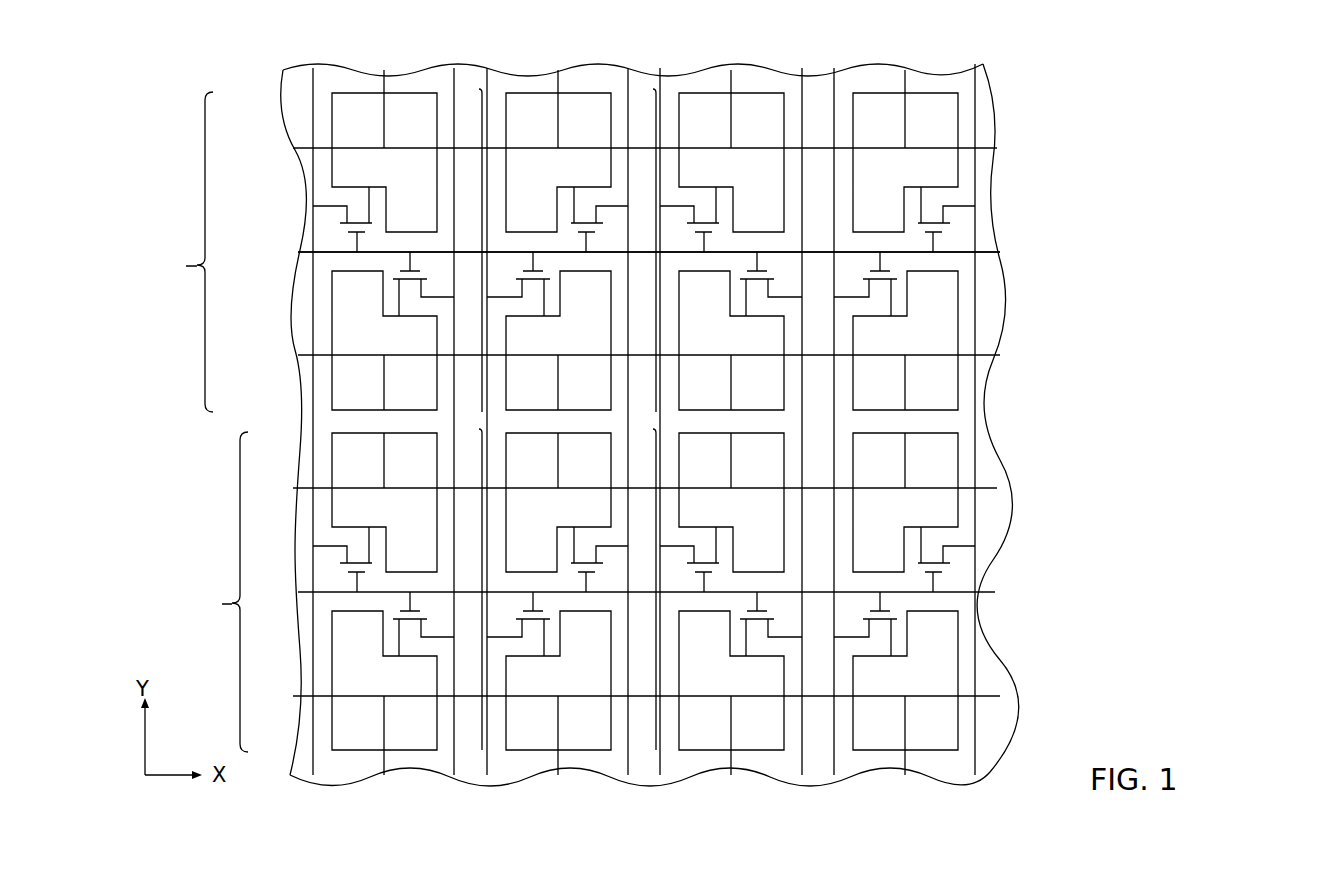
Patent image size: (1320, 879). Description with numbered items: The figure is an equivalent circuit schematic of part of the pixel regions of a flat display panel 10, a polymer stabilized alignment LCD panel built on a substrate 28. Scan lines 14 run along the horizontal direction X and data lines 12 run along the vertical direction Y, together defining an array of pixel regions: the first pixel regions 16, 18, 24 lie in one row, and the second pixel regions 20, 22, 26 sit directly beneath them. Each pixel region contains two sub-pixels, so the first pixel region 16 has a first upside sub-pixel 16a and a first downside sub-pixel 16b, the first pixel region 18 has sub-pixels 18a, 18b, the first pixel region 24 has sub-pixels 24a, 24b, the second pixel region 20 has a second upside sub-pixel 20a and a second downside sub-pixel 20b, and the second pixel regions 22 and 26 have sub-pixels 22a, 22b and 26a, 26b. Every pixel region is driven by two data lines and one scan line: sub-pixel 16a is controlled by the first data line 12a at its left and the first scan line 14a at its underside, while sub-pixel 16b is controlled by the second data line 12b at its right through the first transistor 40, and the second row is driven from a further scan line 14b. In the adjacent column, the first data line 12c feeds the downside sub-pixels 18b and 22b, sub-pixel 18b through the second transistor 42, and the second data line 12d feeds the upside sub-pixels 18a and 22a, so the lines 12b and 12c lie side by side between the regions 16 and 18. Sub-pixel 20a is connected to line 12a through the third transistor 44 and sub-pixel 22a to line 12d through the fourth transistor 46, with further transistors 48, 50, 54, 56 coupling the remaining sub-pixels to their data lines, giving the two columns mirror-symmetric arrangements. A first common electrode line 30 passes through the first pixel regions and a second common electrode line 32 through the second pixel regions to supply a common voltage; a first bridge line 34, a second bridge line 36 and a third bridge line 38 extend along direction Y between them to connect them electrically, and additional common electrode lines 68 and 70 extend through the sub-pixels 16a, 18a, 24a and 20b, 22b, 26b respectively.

The flat display panel 10 is at (1072, 88).
The data lines 12 is at (976, 88).
The first data line 12a is at (313, 120).
The second data line 12b is at (454, 88).
The first data line 12c is at (488, 92).
The second data line 12d is at (627, 90).
The scan lines 14 is at (1000, 250).
The first scan line 14a is at (300, 252).
The second gate line 14b is at (300, 592).
The first pixel region 16 is at (185, 252).
The first upside sub-pixel 16a is at (431, 216).
The first downside sub-pixel 16b is at (379, 306).
The first pixel region 18 is at (482, 316).
The first upside sub-pixel 18a is at (553, 216).
The first downside sub-pixel 18b is at (604, 306).
The second pixel region 20 is at (221, 592).
The second upside sub-pixel 20a is at (431, 556).
The second downside sub-pixel 20b is at (379, 646).
The second pixel region 22 is at (482, 656).
The second upside sub-pixel 22a is at (553, 556).
The second downside sub-pixel 22b is at (604, 646).
The first pixel region 24 is at (656, 316).
The first upside sub-pixel 24a is at (781, 216).
The sub-pixel electrode 24b is at (727, 306).
The second pixel region 26 is at (656, 656).
The sub-pixel electrode 26a is at (781, 556).
The second downside sub-pixel 26b is at (727, 646).
The substrate 28 is at (997, 182).
The first common electrode line 30 is at (995, 352).
The second common electrode line 32 is at (997, 490).
The first bridge line 34 is at (384, 421).
The second bridge line 36 is at (558, 421).
The third bridge line 38 is at (731, 421).
The first transistor 40 is at (426, 291).
The second transistor 42 is at (515, 291).
The third transistor 44 is at (345, 555).
The fourth transistor 46 is at (600, 553).
The thin film transistor 48 is at (345, 215).
The thin film transistor 50 is at (600, 213).
The thin film transistor 54 is at (426, 631).
The thin film transistor 56 is at (515, 631).
The common electrode line 68 is at (300, 148).
The common electrode line 70 is at (997, 698).